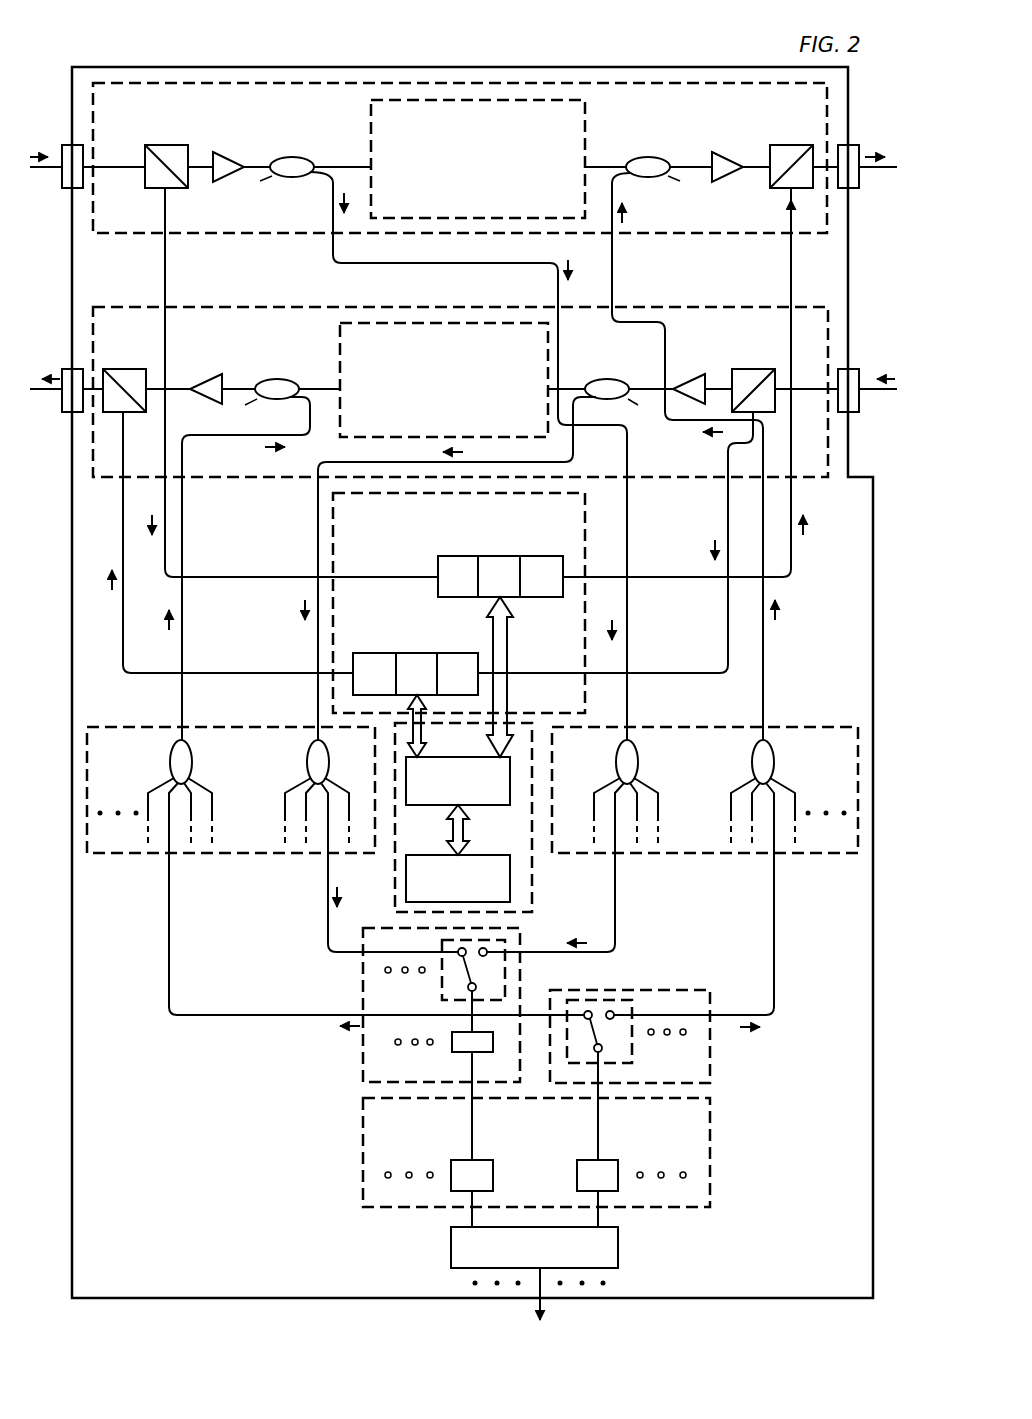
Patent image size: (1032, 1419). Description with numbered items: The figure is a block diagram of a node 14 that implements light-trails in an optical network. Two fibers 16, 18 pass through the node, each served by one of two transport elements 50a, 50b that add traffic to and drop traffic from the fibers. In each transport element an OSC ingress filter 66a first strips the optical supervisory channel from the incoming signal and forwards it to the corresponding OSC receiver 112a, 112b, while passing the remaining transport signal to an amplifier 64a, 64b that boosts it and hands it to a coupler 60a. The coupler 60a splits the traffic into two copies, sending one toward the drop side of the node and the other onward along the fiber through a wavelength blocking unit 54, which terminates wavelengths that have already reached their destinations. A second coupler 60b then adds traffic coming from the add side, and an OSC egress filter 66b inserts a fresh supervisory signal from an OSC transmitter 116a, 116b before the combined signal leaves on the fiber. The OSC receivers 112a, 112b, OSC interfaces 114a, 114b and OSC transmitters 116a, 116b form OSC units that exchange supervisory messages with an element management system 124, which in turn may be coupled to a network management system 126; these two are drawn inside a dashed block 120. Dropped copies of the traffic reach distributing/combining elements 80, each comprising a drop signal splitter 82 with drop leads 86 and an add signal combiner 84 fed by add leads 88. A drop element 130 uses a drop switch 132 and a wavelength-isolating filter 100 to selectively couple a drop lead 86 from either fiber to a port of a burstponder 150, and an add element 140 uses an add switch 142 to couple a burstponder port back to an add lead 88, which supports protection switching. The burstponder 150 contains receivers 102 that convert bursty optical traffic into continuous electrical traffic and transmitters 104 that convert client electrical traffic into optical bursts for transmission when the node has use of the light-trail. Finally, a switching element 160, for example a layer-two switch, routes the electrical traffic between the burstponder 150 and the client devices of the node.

The node 14 is at (210, 64).
The fiber 16 is at (68, 175).
The fiber 18 is at (68, 400).
The transport element 50a is at (252, 240).
The transport element 50b is at (674, 297).
The wavelength blocking unit 54 is at (466, 187).
The coupler 60a is at (292, 157).
The coupler 60b is at (650, 157).
The amplifier 64a is at (232, 152).
The amplifier 64b is at (734, 152).
The OSC ingress filter 66a is at (161, 145).
The OSC egress filter 66b is at (793, 145).
The distributing/combining element 80 is at (229, 860).
The drop signal splitter 82 is at (307, 756).
The add signal combiner 84 is at (193, 762).
The drop lead 86 is at (350, 800).
The add lead 88 is at (148, 800).
The filter 100 is at (452, 1045).
The receiver 102 is at (462, 1160).
The transmitter 104 is at (605, 1160).
The OSC receiver 112a is at (438, 560).
The OSC receiver 112b is at (437, 695).
The OSC interface 114a is at (488, 556).
The OSC interface 114b is at (415, 653).
The OSC transmitter 116a is at (540, 556).
The OSC transmitter 116b is at (375, 653).
The control unit 120 is at (542, 874).
The element management system 124 is at (442, 793).
The network management system 126 is at (442, 890).
The drop element 130 is at (356, 989).
The drop switch 132 is at (440, 975).
The add element 140 is at (651, 984).
The add switch 142 is at (632, 1043).
The burstponder 150 is at (718, 1163).
The switching element 160 is at (618, 1245).